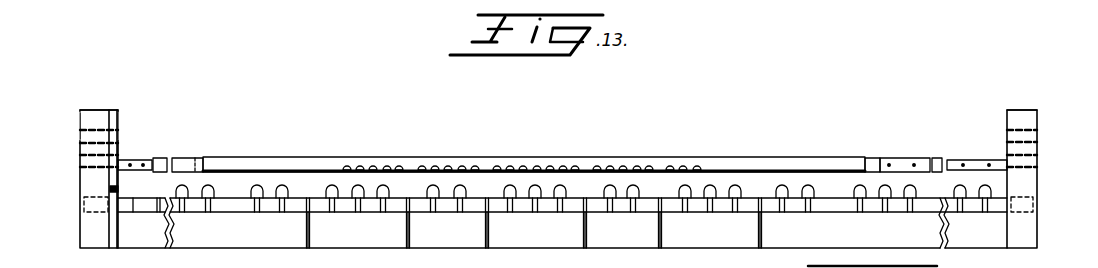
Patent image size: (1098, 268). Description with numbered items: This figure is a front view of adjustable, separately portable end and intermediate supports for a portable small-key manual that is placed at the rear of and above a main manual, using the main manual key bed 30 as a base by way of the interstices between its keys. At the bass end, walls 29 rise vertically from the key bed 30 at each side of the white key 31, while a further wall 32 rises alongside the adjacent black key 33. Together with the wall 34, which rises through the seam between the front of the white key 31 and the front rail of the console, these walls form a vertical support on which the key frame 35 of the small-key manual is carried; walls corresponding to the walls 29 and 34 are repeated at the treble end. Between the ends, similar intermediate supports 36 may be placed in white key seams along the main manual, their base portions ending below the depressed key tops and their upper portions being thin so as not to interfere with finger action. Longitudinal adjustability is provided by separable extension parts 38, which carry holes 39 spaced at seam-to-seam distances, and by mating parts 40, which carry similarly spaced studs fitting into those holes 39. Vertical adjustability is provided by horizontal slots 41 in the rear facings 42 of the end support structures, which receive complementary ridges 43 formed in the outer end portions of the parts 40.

The wall 29 is at (80, 116).
The main manual key bed 30 is at (215, 247).
The white key 31 is at (84, 205).
The wall 32 is at (118, 130).
The black key 33 is at (110, 188).
The wall 34 is at (98, 112).
The key frame 35 is at (310, 145).
The intermediate support 36 is at (405, 230).
The separable extension part 38 is at (185, 162).
The holes 39 is at (183, 168).
The separable extension part 40 is at (136, 160).
The horizontal slots 41 is at (80, 155).
The rear facing 42 is at (90, 120).
The ridges 43 is at (80, 166).